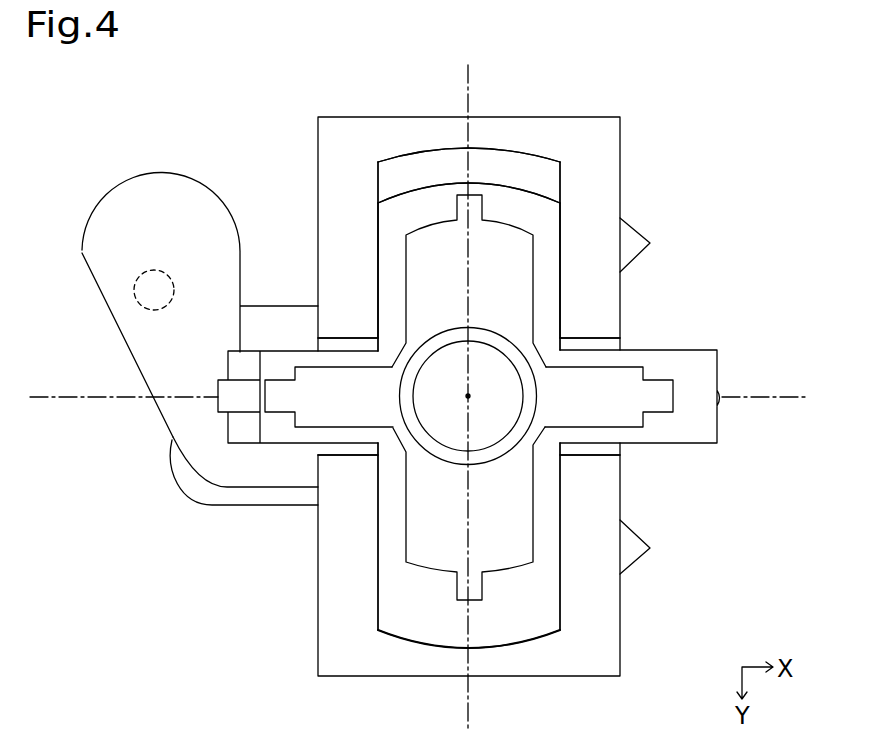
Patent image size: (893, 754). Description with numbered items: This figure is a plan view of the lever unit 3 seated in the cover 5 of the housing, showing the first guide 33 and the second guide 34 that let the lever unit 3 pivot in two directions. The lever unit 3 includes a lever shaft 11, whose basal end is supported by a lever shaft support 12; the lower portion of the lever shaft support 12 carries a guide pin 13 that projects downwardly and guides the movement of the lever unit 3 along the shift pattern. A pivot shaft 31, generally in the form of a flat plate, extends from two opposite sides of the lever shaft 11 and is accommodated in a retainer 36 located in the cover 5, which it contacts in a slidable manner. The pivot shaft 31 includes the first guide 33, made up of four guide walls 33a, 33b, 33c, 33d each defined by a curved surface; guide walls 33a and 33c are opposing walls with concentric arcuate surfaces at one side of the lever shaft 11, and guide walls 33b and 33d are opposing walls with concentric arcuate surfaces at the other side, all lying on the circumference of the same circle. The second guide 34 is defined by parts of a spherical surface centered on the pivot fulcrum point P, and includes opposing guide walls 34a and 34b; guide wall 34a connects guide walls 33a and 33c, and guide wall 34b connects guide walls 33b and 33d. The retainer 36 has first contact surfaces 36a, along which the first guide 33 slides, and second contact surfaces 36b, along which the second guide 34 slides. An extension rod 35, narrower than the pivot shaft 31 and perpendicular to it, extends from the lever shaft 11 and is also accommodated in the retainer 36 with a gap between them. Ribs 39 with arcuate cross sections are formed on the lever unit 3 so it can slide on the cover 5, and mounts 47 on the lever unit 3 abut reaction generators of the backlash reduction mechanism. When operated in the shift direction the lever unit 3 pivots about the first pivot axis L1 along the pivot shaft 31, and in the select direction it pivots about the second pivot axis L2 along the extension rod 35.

The lever unit 3 is at (265, 580).
The cover 5 is at (620, 130).
The lever shaft 11 is at (450, 460).
The lever shaft support 12 is at (278, 507).
The guide pin 13 is at (132, 288).
The pivot shaft 31 is at (378, 185).
The first guide 33 is at (468, 397).
The guide wall 33a is at (378, 228).
The guide wall 33b is at (378, 612).
The guide wall 33c is at (560, 225).
The guide wall 33d is at (563, 493).
The second guide 34 is at (440, 398).
The guide wall 34a is at (463, 146).
The guide wall 34b is at (463, 650).
The extension rod 35 is at (668, 350).
The retainer 36 is at (552, 294).
The first contact surface 36a is at (379, 259).
The second contact surface 36b is at (541, 159).
The rib 39 is at (317, 390).
The mount 47 is at (672, 568).
The pivot fulcrum point P is at (470, 396).
The first pivot axis L1 is at (470, 705).
The second pivot axis L2 is at (785, 396).